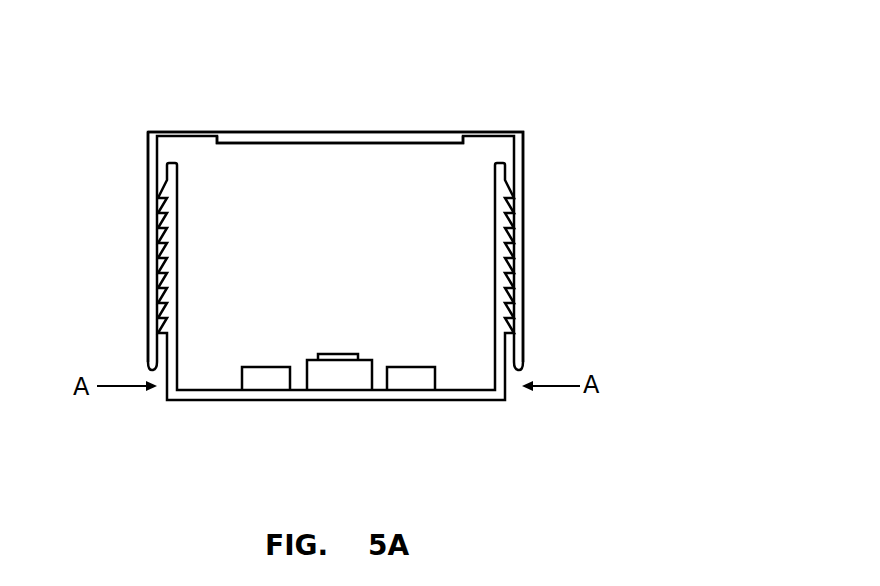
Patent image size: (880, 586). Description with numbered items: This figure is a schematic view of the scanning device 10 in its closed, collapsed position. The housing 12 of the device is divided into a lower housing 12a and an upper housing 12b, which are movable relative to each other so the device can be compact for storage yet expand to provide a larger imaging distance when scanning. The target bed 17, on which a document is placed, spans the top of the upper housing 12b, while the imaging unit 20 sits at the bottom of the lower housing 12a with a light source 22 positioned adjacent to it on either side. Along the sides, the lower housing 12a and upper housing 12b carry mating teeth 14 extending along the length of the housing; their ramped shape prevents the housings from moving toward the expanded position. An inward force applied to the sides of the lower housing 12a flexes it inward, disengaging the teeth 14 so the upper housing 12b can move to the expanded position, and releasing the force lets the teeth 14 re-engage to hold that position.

The scanning device 10 is at (220, 88).
The housing 12 is at (389, 235).
The lower housing 12a is at (522, 358).
The upper housing 12b is at (524, 160).
The teeth 14 is at (160, 243).
The target bed 17 is at (395, 131).
The imaging unit 20 is at (322, 372).
The light source 22 is at (253, 383).